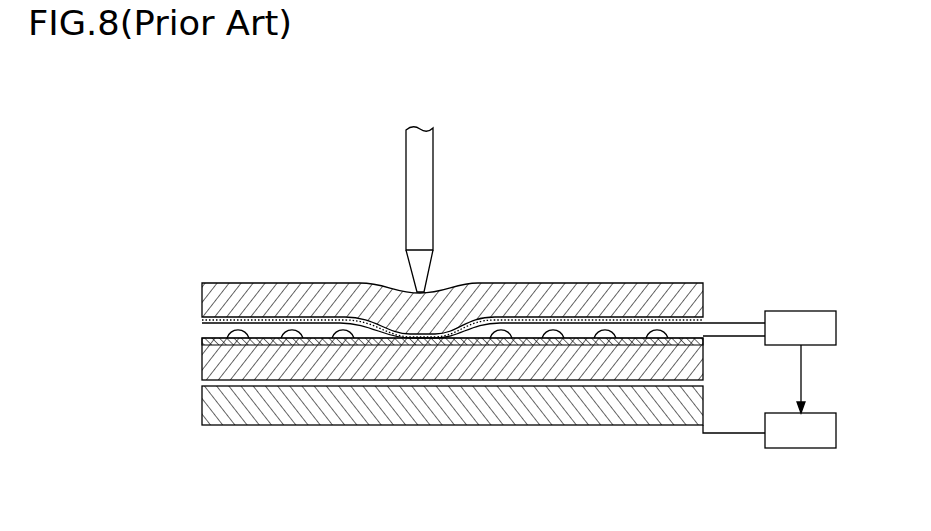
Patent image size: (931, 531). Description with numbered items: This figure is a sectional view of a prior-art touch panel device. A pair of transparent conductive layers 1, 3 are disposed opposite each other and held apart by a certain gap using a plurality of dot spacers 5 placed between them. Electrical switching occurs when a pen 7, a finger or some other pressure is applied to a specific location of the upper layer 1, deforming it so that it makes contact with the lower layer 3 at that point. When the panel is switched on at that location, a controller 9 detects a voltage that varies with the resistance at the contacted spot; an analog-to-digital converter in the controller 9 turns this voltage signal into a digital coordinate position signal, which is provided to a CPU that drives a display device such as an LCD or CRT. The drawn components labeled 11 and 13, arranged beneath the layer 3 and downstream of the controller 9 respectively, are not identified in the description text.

The transparent conductive layer 1 is at (452, 279).
The transparent conductive layer 3 is at (423, 358).
The dot spacer 5 is at (447, 279).
The pen 7 is at (444, 209).
The controller 9 is at (791, 342).
The display device 11 is at (417, 405).
The control unit 13 is at (786, 444).